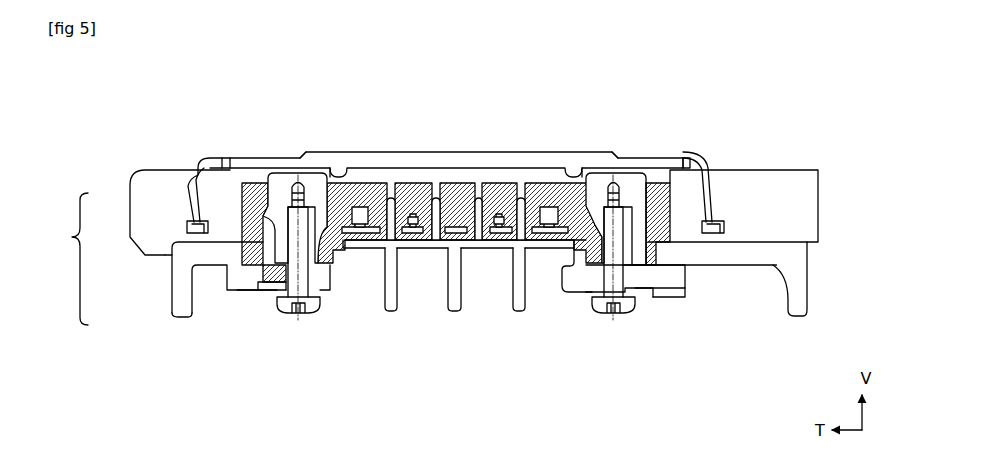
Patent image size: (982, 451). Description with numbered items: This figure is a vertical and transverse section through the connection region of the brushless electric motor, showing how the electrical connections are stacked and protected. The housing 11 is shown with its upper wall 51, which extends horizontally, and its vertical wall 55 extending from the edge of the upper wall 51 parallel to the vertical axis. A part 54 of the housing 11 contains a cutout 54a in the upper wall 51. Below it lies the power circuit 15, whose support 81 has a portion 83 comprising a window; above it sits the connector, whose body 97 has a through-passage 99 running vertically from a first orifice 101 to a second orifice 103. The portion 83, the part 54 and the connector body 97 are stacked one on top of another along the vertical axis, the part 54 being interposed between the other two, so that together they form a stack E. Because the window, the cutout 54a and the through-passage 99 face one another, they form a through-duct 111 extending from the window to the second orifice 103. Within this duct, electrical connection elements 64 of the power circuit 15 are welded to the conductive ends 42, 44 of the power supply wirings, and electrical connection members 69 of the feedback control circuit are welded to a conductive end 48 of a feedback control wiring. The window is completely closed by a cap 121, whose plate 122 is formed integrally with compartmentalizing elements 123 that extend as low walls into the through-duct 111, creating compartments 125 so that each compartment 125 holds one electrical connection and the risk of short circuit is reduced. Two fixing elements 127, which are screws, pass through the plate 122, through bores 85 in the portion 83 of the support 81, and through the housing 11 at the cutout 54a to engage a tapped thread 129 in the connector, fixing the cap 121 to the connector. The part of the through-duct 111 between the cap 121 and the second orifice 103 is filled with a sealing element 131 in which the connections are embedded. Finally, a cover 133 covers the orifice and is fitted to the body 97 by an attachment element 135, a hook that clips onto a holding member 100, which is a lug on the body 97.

The housing 11 is at (812, 270).
The power circuit 15 is at (680, 282).
The conductive end 42 is at (585, 168).
The conductive end 44 is at (338, 176).
The conductive end 48 is at (420, 200).
The upper wall 51 is at (140, 232).
The part of the housing 54 is at (166, 253).
The cutout 54a is at (262, 252).
The vertical wall 55 is at (178, 300).
The electrical connection element 64 is at (358, 256).
The electrical connection member 69 is at (392, 270).
The support 81 is at (676, 292).
The portion of the support 83 is at (216, 275).
The bore 85 is at (665, 275).
The body 97 is at (230, 166).
The through-passage 99 is at (340, 192).
The holding member 100 is at (194, 180).
The first orifice 101 is at (578, 262).
The second orifice 103 is at (582, 180).
The through-duct 111 is at (455, 262).
The cap 121 is at (584, 296).
The plate 122 is at (300, 318).
The compartmentalizing element 123 is at (362, 210).
The compartment 125 is at (352, 225).
The fixing element 127 is at (290, 310).
The tapped thread 129 is at (640, 220).
The sealing element 131 is at (282, 178).
The cover 133 is at (470, 226).
The attachment element 135 is at (196, 218).
The stack E is at (70, 259).